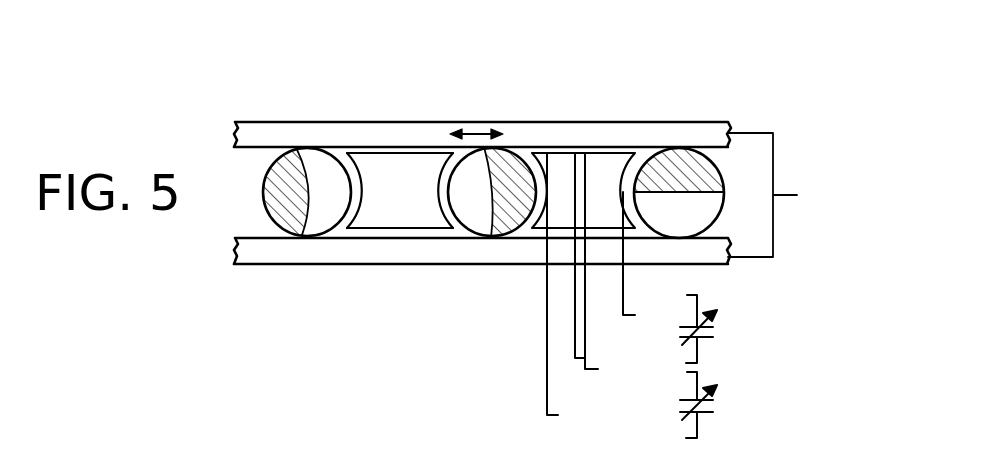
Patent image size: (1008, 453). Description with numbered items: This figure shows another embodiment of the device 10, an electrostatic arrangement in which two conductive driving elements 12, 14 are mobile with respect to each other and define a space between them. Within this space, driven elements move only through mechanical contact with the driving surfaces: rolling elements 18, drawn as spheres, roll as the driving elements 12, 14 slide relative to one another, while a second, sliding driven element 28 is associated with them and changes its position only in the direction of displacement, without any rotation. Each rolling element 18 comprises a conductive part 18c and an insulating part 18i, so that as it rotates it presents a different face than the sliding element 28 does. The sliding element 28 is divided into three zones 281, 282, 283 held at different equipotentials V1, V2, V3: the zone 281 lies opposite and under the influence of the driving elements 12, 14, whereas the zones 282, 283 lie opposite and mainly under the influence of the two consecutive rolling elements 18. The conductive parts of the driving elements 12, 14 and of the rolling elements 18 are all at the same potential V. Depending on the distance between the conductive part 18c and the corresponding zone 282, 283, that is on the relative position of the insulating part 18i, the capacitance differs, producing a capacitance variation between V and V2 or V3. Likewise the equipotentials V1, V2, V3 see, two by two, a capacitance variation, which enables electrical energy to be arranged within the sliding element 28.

The device 10 is at (803, 92).
The driving element 12 is at (702, 262).
The driving element 14 is at (622, 138).
The rolling driven element 18 is at (682, 160).
The insulating part 18i is at (275, 160).
The conductive part 18c is at (323, 177).
The sliding driven element 28 is at (487, 199).
The zone 281 is at (403, 230).
The zone 282 is at (434, 230).
The zone 283 is at (361, 229).
The potential V is at (772, 195).
The equipotential V1 is at (603, 267).
The equipotential V2 is at (645, 261).
The equipotential V3 is at (569, 292).